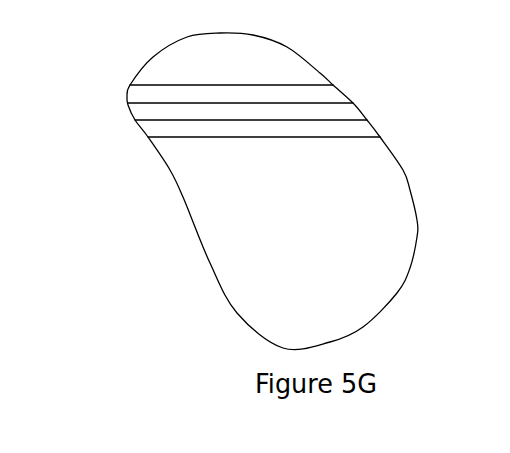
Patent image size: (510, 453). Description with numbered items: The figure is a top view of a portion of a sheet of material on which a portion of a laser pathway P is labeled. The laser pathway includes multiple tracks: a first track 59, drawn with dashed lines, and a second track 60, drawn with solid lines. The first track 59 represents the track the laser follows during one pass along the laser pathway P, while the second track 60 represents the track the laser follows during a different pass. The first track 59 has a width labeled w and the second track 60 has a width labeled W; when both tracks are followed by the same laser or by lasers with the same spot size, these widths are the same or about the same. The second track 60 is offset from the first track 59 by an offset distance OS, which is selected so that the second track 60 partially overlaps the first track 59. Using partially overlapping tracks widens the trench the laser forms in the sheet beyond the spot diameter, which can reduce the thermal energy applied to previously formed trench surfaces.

The first track 59 is at (118, 85).
The second track 60 is at (395, 102).
The offset distance OS is at (222, 104).
The laser pathway portion P is at (430, 83).